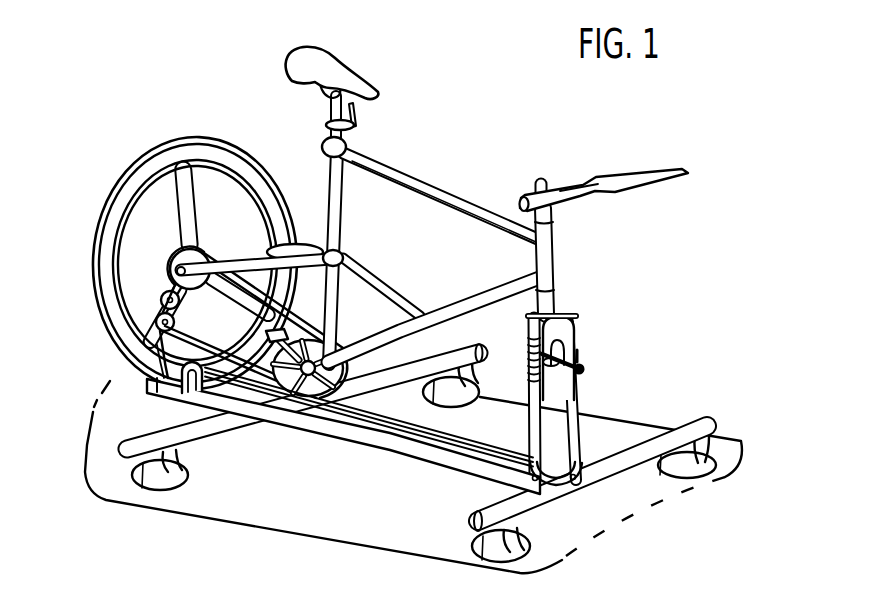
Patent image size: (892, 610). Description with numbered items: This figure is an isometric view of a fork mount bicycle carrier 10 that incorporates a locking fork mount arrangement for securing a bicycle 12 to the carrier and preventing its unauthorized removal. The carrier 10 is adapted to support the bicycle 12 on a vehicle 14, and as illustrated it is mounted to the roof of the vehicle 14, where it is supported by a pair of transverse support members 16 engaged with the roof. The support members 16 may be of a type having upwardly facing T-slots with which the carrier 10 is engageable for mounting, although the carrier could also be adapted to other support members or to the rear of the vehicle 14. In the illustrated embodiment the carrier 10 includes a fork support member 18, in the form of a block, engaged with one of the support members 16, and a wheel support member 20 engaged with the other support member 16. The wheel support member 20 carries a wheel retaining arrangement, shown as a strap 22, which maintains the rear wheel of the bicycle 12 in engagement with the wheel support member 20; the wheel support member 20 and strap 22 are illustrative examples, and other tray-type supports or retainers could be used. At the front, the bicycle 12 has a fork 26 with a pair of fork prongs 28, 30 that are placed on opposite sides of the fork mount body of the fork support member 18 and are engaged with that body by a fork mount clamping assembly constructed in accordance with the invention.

The fork mount bicycle carrier 10 is at (434, 453).
The bicycle 12 is at (374, 263).
The vehicle 14 is at (633, 417).
The support members 16 is at (172, 427).
The fork support member 18 is at (555, 455).
The wheel support member 20 is at (142, 393).
The strap 22 is at (153, 357).
The fork 26 is at (577, 325).
The fork prong 28 is at (517, 433).
The fork prong 30 is at (573, 391).